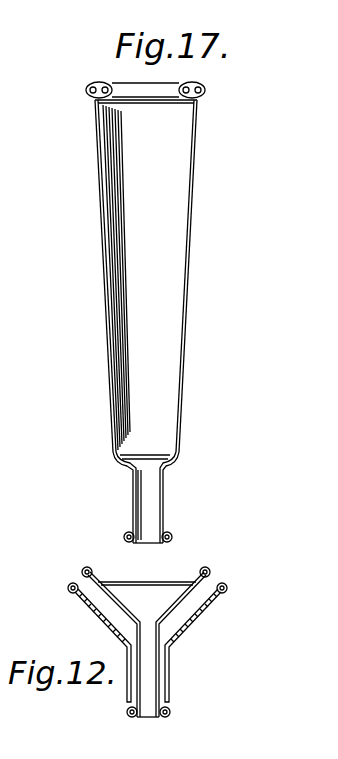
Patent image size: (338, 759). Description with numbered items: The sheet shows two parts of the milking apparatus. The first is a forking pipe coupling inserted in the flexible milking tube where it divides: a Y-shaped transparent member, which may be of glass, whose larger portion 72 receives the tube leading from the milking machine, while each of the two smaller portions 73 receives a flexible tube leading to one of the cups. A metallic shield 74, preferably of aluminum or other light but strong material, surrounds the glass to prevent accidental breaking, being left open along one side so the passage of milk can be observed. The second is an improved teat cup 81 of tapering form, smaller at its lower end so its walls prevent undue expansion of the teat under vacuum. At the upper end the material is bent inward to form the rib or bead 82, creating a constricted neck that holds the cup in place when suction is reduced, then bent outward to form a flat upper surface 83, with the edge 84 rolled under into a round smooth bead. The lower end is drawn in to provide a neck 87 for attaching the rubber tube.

In FIG. 17, the cup 81 is at (188, 306).
In FIG. 17, the inwardly extending rib 82 is at (190, 81).
In FIG. 17, the flat upper surface 83 is at (98, 86).
In FIG. 17, the edge 84 is at (90, 95).
In FIG. 17, the neck 87 is at (150, 506).
In FIG. 12, the larger portion 72 is at (148, 711).
In FIG. 12, the smaller portions 73 is at (82, 571).
In FIG. 12, the metallic shield 74 is at (170, 663).